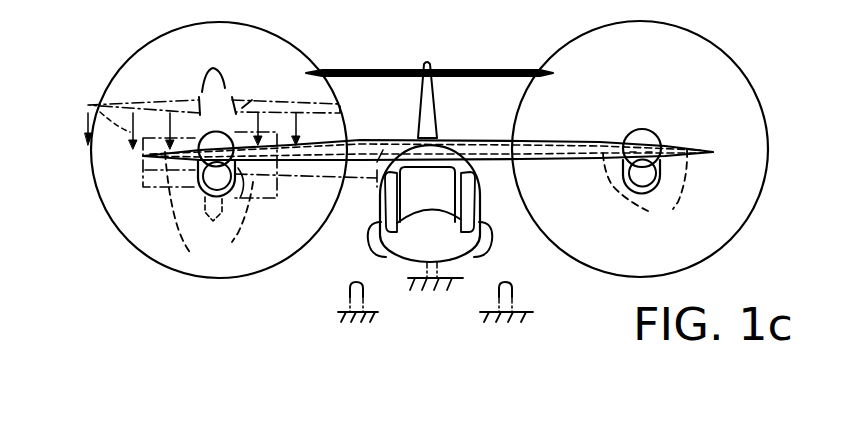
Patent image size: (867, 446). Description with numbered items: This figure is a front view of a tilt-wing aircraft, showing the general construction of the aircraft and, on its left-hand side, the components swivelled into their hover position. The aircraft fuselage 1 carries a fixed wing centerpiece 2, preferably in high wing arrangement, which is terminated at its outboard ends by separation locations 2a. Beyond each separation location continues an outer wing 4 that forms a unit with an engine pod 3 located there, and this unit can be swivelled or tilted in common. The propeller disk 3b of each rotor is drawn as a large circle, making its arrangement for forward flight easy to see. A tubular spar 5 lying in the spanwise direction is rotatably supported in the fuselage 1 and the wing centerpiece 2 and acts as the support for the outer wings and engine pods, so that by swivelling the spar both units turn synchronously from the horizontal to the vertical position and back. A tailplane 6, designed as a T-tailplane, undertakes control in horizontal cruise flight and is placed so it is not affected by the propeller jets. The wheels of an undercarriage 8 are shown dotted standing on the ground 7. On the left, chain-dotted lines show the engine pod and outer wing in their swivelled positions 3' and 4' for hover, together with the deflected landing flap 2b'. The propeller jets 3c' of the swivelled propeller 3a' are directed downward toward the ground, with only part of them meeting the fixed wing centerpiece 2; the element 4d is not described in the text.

The aircraft fuselage 1 is at (448, 248).
The wing centerpiece 2 is at (493, 140).
The separation location 2a is at (292, 210).
The landing flap in deflected position 2b' is at (260, 189).
The engine pod 3 is at (645, 142).
The engine pod in swivelled position 3' is at (202, 119).
The swivelled propeller 3a' is at (256, 74).
The propeller disk 3b is at (558, 50).
The propeller jets of the swivelled propeller 3c' is at (188, 115).
The outer wing 4 is at (645, 193).
The outer wing in swivelled position 4' is at (209, 212).
The engine pod element 4d is at (199, 221).
The tubular spar 5 is at (392, 138).
The tailplane 6 is at (446, 72).
The ground 7 is at (418, 280).
The undercarriage 8 is at (492, 332).